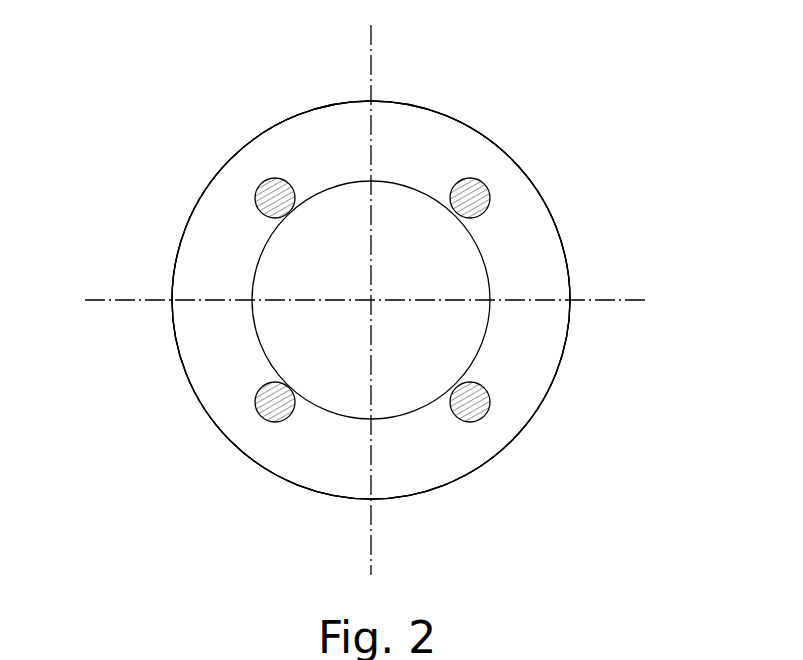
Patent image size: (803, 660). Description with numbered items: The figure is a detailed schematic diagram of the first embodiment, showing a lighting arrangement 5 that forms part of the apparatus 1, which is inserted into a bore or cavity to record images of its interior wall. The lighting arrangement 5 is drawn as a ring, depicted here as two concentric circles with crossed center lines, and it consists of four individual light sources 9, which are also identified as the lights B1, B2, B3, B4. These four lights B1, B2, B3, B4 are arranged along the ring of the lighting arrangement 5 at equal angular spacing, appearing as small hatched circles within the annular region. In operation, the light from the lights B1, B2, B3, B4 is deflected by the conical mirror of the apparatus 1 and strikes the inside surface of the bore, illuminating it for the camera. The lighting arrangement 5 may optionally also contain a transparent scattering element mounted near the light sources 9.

The apparatus 1 is at (516, 67).
The lighting arrangement 5 is at (578, 230).
The light sources 9 is at (420, 134).
The light B1 is at (258, 187).
The light B2 is at (487, 184).
The light B3 is at (259, 418).
The light B4 is at (489, 403).